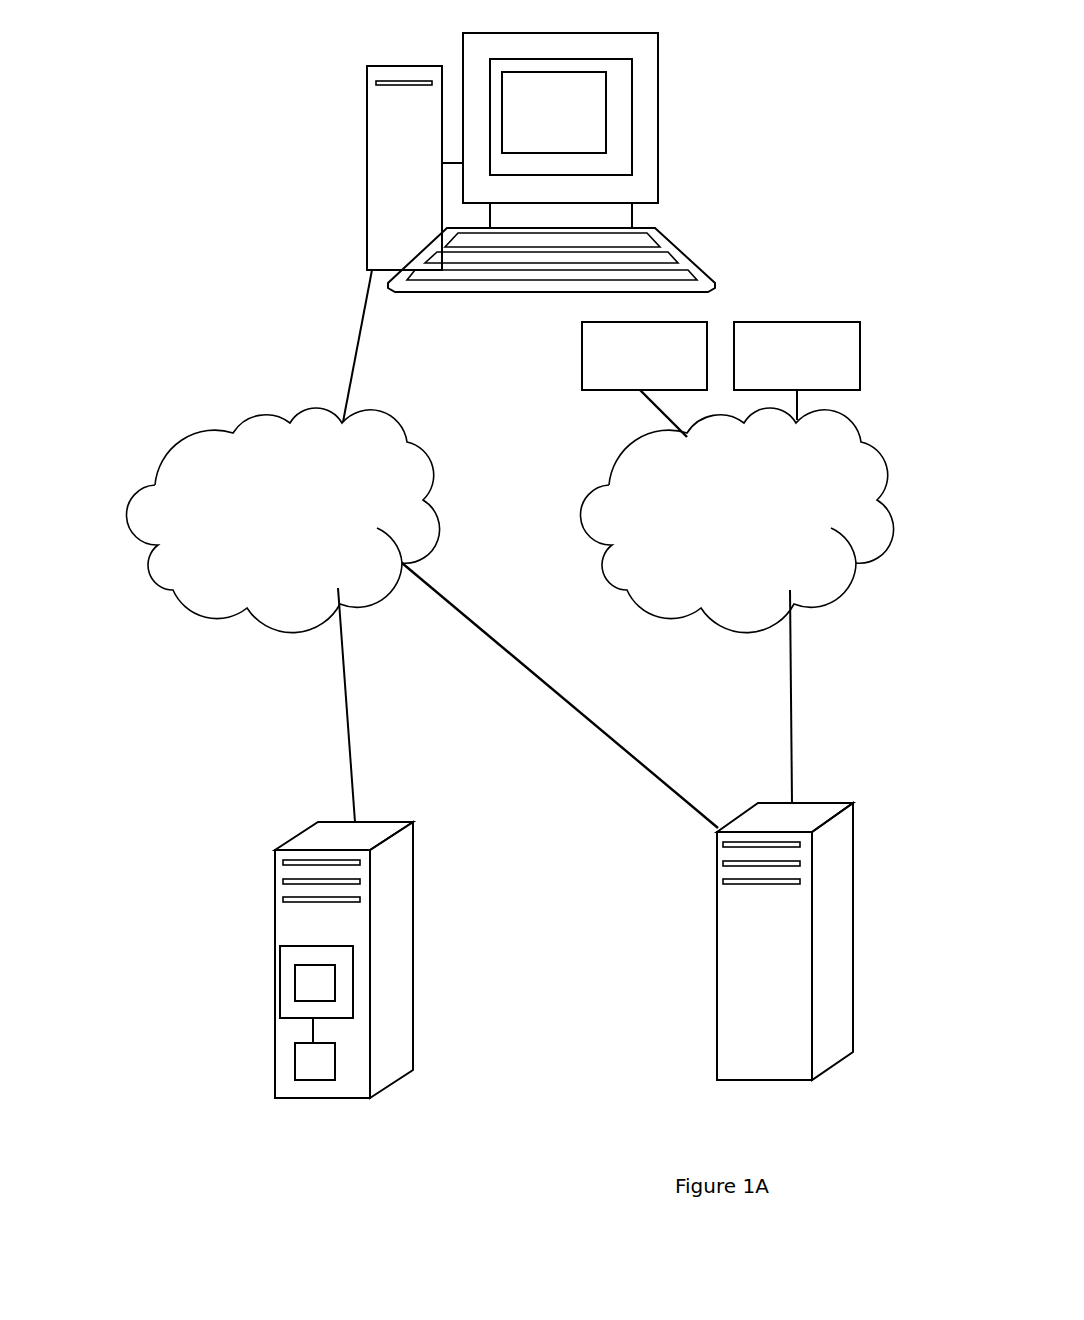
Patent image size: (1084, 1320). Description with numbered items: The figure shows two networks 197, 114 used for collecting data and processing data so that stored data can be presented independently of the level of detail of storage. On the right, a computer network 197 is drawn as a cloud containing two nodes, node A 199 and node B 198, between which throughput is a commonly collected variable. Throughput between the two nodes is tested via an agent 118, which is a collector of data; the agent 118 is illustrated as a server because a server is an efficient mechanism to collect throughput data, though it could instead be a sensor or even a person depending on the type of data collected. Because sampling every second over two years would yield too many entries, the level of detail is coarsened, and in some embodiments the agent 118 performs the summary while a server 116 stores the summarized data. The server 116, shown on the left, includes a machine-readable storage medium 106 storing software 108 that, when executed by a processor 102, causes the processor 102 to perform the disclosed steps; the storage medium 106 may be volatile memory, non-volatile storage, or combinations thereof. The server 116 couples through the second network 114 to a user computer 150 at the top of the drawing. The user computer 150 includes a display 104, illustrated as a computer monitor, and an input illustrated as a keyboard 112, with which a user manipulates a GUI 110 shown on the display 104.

The user computer 150 is at (318, 134).
The display 104 is at (618, 127).
The GUI 110 is at (554, 112).
The keyboard 112 is at (667, 248).
The network 114 is at (282, 520).
The computer network 197 is at (736, 520).
The node A 199 is at (644, 356).
The node B 198 is at (797, 356).
The server 116 is at (300, 842).
The machine-readable storage medium 106 is at (292, 950).
The software 108 is at (302, 988).
The processor 102 is at (300, 1067).
The agent 118 is at (732, 1048).